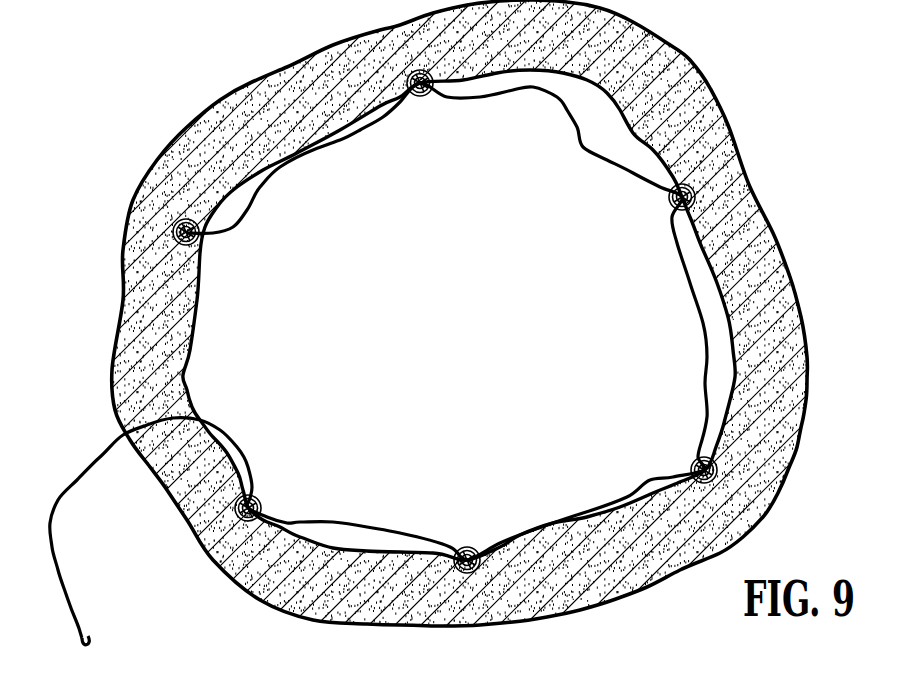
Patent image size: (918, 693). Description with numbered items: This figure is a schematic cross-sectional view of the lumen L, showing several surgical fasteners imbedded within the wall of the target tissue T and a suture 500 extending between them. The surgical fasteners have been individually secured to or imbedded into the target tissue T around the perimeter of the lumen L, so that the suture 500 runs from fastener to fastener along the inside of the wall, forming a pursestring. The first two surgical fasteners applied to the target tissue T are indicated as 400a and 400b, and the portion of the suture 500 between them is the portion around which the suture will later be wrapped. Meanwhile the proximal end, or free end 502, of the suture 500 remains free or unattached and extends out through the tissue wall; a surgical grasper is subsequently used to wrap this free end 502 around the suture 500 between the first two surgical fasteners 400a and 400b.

The first surgical fastener 400a is at (181, 227).
The second surgical fastener 400b is at (412, 80).
The suture 500 is at (296, 158).
The free end of suture 502 is at (72, 629).
The target tissue T is at (637, 60).
The lumen L is at (617, 313).